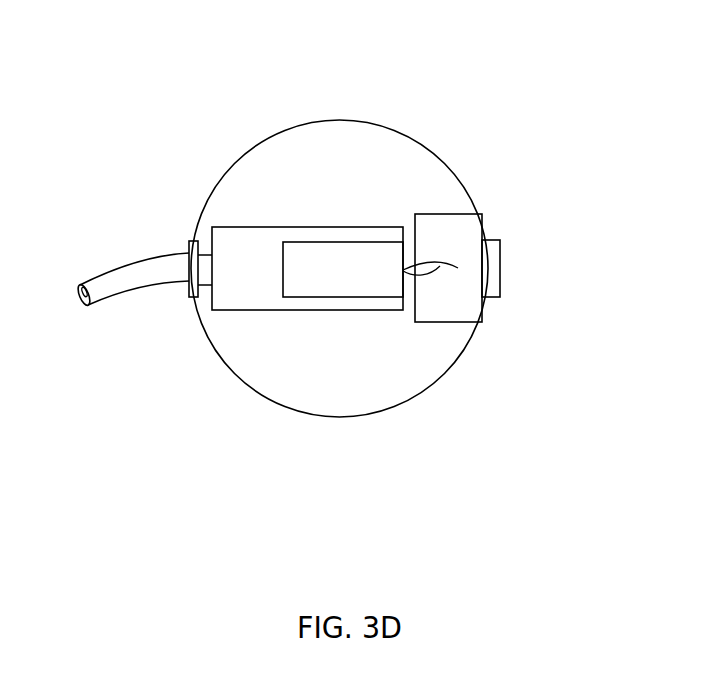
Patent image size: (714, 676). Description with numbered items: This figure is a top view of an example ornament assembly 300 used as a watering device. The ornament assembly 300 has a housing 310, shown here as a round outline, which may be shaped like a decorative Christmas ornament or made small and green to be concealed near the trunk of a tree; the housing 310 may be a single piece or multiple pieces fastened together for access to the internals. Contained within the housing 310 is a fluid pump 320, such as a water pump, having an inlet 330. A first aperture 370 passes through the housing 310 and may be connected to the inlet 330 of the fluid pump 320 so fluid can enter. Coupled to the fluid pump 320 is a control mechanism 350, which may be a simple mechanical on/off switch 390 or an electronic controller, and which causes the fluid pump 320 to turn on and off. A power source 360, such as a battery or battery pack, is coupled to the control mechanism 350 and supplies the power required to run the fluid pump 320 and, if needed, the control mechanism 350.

The ornament assembly 300 is at (502, 98).
The housing 310 is at (442, 378).
The fluid pump 320 is at (257, 257).
The inlet 330 is at (205, 250).
The control mechanism 350 is at (460, 303).
The power source 360 is at (339, 275).
The first aperture 370 is at (192, 289).
The mechanical on/off switch 390 is at (500, 253).